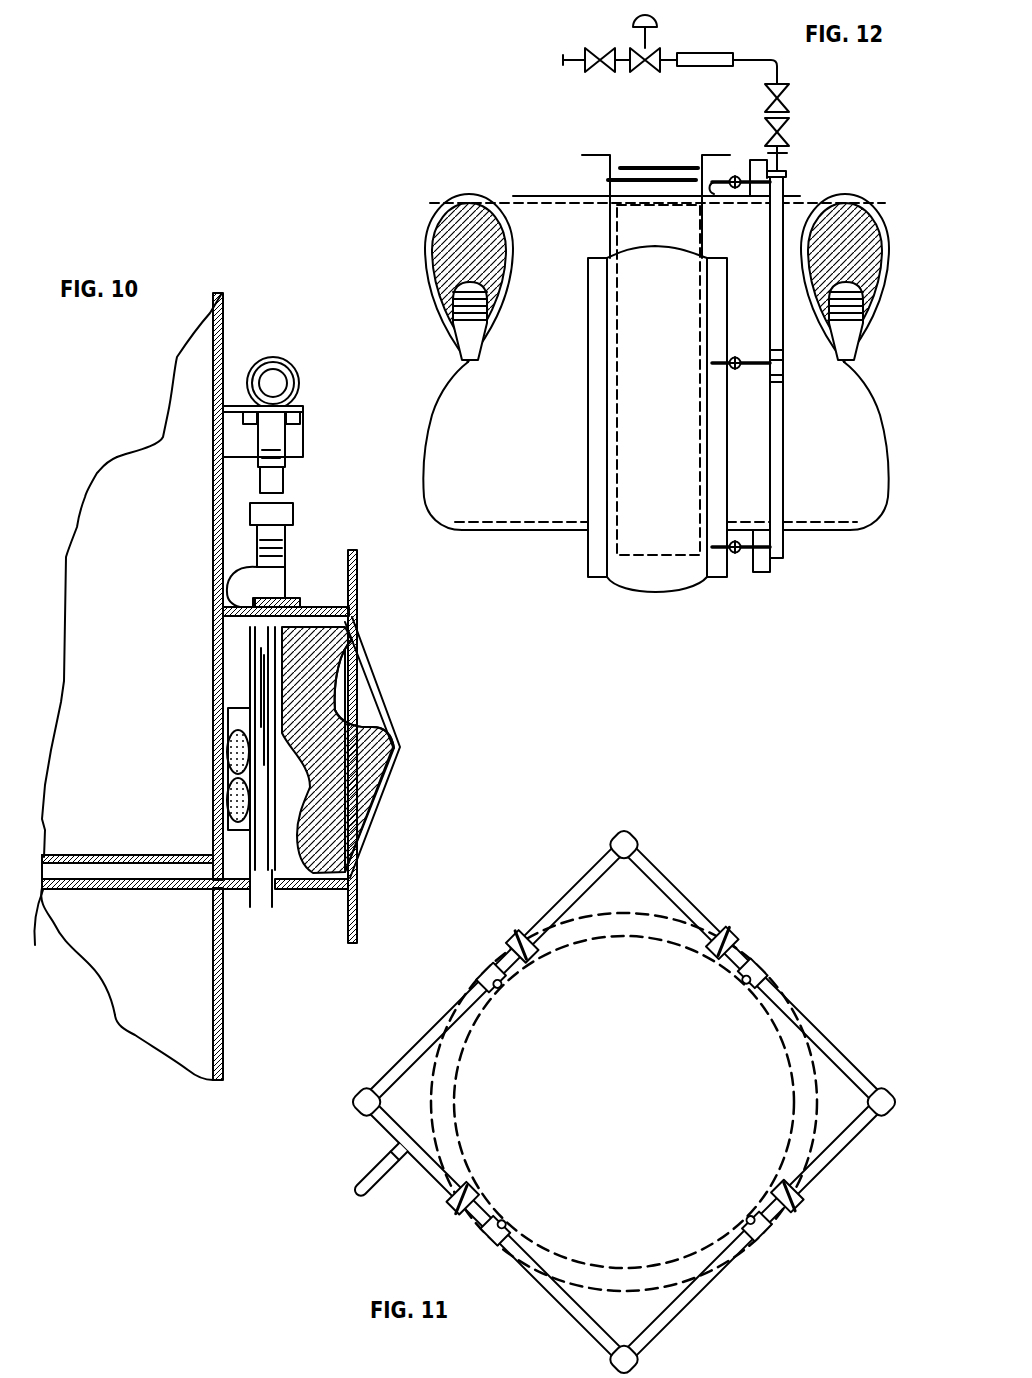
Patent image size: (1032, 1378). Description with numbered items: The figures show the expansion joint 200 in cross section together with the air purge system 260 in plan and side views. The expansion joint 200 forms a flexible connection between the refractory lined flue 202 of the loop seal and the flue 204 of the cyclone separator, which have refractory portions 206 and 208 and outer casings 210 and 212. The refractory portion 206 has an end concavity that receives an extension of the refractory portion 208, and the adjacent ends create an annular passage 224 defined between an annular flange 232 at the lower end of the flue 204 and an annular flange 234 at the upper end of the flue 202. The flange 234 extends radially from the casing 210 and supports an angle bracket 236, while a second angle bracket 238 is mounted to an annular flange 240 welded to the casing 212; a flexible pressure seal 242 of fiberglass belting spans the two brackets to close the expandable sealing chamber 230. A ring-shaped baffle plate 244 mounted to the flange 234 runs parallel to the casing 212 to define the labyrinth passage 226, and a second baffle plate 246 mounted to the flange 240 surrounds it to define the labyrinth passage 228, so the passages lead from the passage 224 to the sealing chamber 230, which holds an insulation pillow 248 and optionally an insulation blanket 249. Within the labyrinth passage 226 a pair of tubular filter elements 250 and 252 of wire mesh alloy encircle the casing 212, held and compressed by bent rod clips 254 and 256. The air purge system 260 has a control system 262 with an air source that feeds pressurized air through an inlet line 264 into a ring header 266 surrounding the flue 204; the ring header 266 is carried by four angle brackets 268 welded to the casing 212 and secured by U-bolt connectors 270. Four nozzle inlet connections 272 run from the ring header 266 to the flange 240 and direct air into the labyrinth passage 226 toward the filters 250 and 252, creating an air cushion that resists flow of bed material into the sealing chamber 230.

In FIG. 10, the expansion joint 200 is at (448, 743).
In FIG. 10, the flue 202 is at (103, 1025).
In FIG. 10, the flue 204 is at (62, 512).
In FIG. 12, the flue 204 is at (906, 277).
In FIG. 11, the flue 204 is at (624, 1102).
In FIG. 10, the refractory portion 206 is at (160, 1033).
In FIG. 12, the refractory portion 206 is at (442, 227).
In FIG. 10, the refractory portion 208 is at (163, 457).
In FIG. 10, the outer casing 210 is at (223, 1013).
In FIG. 10, the outer casing 212 is at (223, 320).
In FIG. 10, the passage 224 is at (48, 893).
In FIG. 10, the labyrinth passage 226 is at (232, 672).
In FIG. 10, the labyrinth passage 228 is at (267, 885).
In FIG. 10, the sealing chamber 230 is at (355, 673).
In FIG. 10, the annular flange 232 is at (85, 855).
In FIG. 10, the annular flange 234 is at (112, 888).
In FIG. 10, the angle bracket 236 is at (313, 893).
In FIG. 10, the angle bracket 238 is at (332, 612).
In FIG. 10, the annular flange 240 is at (290, 600).
In FIG. 10, the flexible pressure seal 242 is at (393, 713).
In FIG. 10, the baffle plate 244 is at (233, 892).
In FIG. 12, the baffle plate 244 is at (655, 183).
In FIG. 10, the baffle plate 246 is at (362, 843).
In FIG. 12, the baffle plate 246 is at (631, 166).
In FIG. 10, the insulation pillow 248 is at (372, 758).
In FIG. 10, the insulation blanket 249 is at (250, 662).
In FIG. 10, the tubular filter element 250 is at (230, 770).
In FIG. 10, the tubular filter element 252 is at (225, 812).
In FIG. 10, the clip 254 is at (238, 722).
In FIG. 10, the clip 256 is at (230, 840).
In FIG. 10, the air purge system 260 is at (248, 266).
In FIG. 12, the air purge system 260 is at (830, 133).
In FIG. 11, the air purge system 260 is at (836, 904).
In FIG. 12, the control system 262 is at (746, 79).
In FIG. 11, the inlet line 264 is at (362, 1192).
In FIG. 10, the ring header 266 is at (275, 362).
In FIG. 12, the ring header 266 is at (777, 507).
In FIG. 11, the ring header 266 is at (787, 996).
In FIG. 10, the angle bracket 268 is at (299, 430).
In FIG. 12, the angle bracket 268 is at (773, 164).
In FIG. 11, the angle bracket 268 is at (512, 933).
In FIG. 10, the U-bolt connector 270 is at (301, 390).
In FIG. 11, the U-bolt connector 270 is at (511, 934).
In FIG. 10, the nozzle inlet connection 272 is at (237, 550).
In FIG. 12, the nozzle inlet connection 272 is at (736, 177).